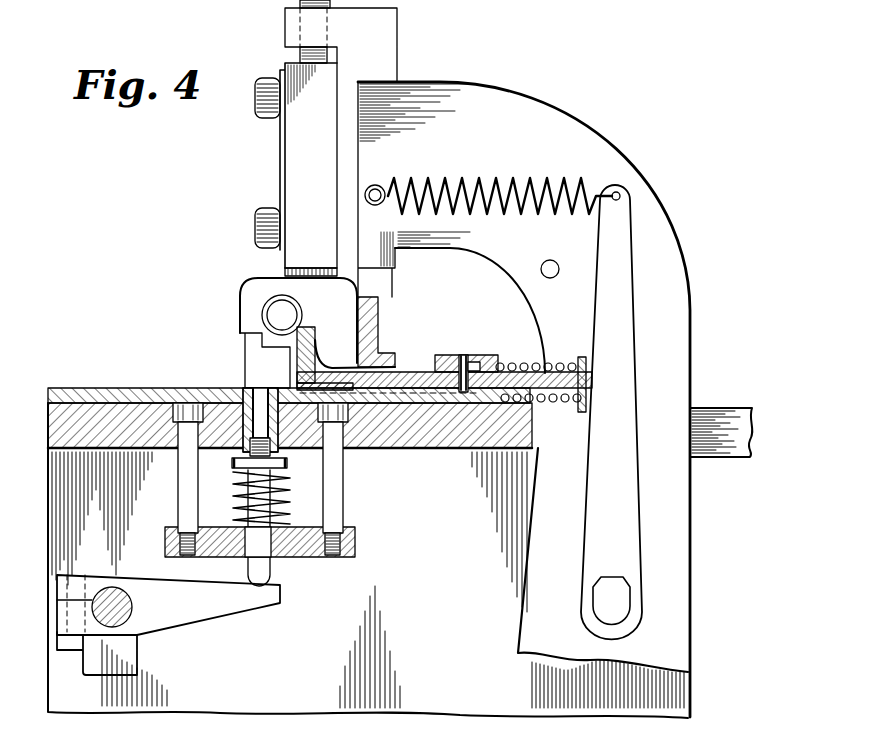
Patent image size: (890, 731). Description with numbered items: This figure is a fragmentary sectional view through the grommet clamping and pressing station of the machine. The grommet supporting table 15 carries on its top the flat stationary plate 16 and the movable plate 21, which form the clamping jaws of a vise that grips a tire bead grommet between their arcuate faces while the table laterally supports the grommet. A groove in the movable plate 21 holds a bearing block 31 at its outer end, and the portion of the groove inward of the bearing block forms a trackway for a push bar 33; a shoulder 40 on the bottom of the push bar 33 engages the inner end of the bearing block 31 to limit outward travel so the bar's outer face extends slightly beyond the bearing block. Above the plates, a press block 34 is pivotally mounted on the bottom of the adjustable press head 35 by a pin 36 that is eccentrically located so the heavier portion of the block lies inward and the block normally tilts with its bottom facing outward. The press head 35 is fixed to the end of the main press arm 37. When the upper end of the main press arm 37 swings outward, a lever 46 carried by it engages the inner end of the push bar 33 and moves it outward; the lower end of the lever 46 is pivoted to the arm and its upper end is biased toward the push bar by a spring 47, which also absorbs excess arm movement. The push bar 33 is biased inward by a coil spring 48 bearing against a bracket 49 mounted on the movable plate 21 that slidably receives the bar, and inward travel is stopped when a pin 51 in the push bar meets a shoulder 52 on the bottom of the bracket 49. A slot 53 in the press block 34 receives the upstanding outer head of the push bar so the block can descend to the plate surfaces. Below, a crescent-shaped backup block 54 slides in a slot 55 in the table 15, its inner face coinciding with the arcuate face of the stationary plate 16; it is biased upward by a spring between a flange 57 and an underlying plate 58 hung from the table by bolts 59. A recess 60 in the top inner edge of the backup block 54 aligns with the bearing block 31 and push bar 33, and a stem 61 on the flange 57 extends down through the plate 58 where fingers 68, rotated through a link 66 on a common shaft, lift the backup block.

The grommet supporting table 15 is at (70, 427).
The flat stationary plate 16 is at (108, 390).
The movable plate 21 is at (412, 404).
The bearing block 31 is at (325, 384).
The push bar 33 is at (418, 373).
The press block 34 is at (256, 293).
The adjustable press head 35 is at (306, 152).
The pin 36 is at (294, 318).
The main press arm 37 is at (545, 112).
The shoulder 40 is at (358, 392).
The lever 46 is at (617, 337).
The spring 47 is at (456, 179).
The coil spring 48 is at (527, 362).
The bracket 49 is at (447, 355).
The pin 51 is at (463, 355).
The shoulder 52 is at (475, 366).
The slot 53 is at (246, 363).
The backup block 54 is at (250, 417).
The slot 55 is at (278, 420).
The flange 57 is at (236, 463).
The underlying plate 58 is at (357, 543).
The bolts 59 is at (180, 470).
The recess 60 is at (287, 395).
The stem 61 is at (266, 568).
The link 66 is at (120, 662).
The fingers 68 is at (211, 606).